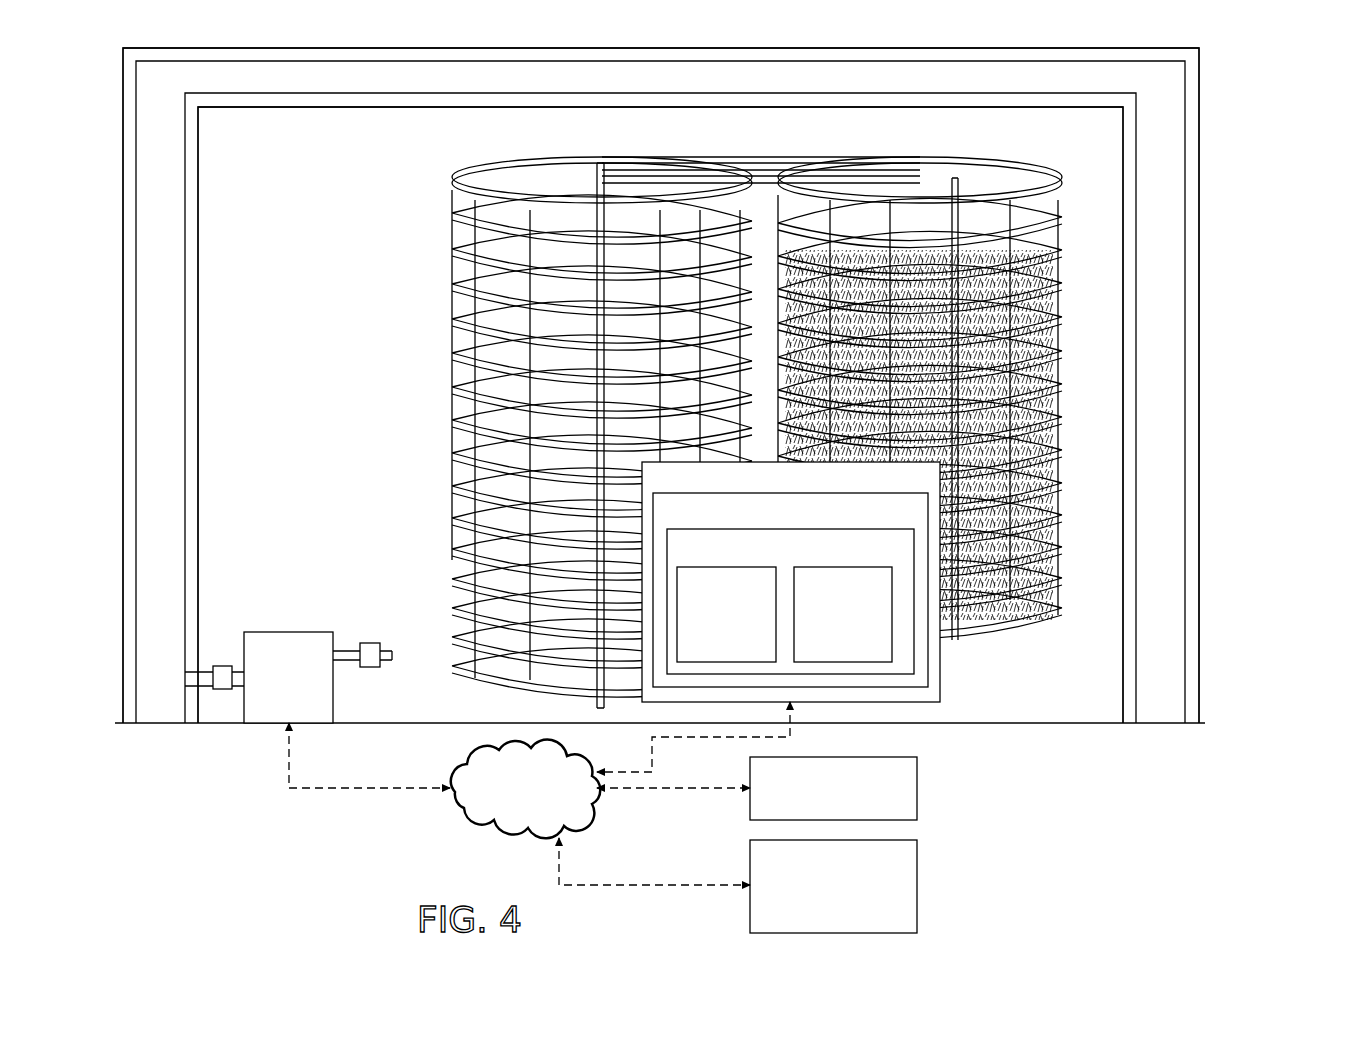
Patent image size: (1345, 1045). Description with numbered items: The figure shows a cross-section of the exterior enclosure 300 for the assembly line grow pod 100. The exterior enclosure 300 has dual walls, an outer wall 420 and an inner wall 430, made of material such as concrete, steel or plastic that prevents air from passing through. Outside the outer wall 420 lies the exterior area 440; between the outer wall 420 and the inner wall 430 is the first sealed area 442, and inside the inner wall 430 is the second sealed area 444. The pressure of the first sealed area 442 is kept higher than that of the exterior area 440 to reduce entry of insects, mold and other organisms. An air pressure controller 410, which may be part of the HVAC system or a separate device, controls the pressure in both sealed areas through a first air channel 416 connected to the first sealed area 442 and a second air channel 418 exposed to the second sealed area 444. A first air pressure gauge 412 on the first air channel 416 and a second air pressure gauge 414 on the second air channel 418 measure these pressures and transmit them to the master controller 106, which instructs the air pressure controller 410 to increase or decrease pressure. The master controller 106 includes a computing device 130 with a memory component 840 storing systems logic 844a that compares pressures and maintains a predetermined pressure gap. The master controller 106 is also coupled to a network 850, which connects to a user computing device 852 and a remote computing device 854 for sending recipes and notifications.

The exterior enclosure 300 is at (1222, 104).
The assembly line grow pod 100 is at (418, 213).
The master controller 106 is at (990, 752).
The computing device 130 is at (890, 522).
The memory component 840 is at (905, 559).
The systems logic 844a is at (758, 653).
The air pressure controller 410 is at (290, 632).
The first air pressure gauge 412 is at (226, 690).
The second air pressure gauge 414 is at (372, 643).
The first air channel 416 is at (216, 666).
The second air channel 418 is at (355, 660).
The outer wall 420 is at (123, 157).
The inner wall 430 is at (198, 210).
The exterior area 440 is at (458, 41).
The first sealed area 442 is at (458, 86).
The second sealed area 444 is at (458, 137).
The network 850 is at (452, 806).
The user computing device 852 is at (917, 795).
The remote computing device 854 is at (917, 888).